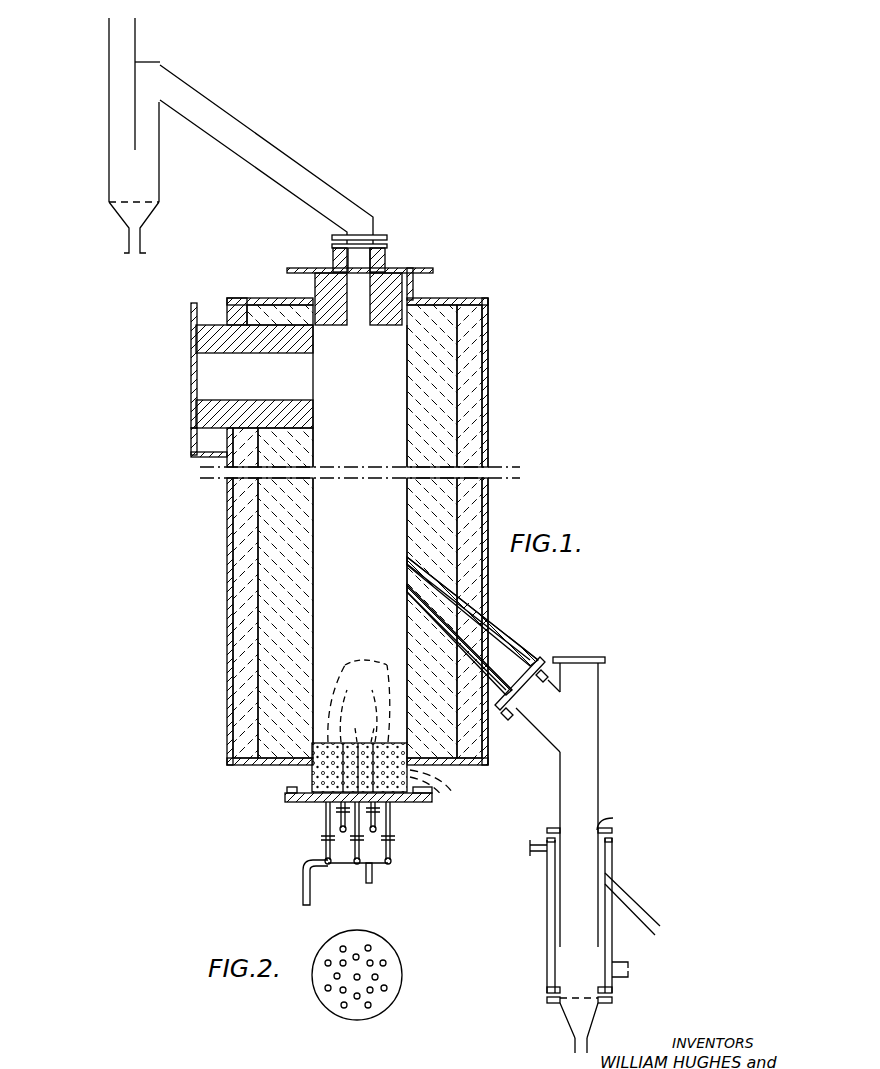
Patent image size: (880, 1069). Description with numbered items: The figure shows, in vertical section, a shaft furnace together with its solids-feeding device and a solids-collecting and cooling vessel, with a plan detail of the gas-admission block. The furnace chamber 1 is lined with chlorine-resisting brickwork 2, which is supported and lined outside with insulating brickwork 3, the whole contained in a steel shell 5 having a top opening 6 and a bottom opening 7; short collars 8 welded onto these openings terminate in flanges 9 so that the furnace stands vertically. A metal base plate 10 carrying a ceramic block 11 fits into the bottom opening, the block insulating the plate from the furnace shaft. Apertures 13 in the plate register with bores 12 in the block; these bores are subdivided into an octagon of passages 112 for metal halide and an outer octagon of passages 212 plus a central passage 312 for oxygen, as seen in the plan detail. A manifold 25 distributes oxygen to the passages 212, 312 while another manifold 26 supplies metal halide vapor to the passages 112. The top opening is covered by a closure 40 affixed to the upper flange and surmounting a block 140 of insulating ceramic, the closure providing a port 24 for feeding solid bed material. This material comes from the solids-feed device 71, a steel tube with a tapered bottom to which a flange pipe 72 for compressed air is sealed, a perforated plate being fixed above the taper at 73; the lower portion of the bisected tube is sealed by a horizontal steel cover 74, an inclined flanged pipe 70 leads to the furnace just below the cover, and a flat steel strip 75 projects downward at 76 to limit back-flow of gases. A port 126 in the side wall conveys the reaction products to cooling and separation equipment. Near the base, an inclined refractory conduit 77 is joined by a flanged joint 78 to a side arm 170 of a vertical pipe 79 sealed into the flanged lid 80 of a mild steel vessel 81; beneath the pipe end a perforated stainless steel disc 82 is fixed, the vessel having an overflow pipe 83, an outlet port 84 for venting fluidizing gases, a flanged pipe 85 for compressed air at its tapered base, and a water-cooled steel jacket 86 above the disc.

In FIG. 1, the furnace chamber 1 is at (490, 378).
In FIG. 1, the chlorine-resisting brickwork 2 is at (447, 505).
In FIG. 1, the insulating brickwork 3 is at (478, 572).
In FIG. 1, the steel shell 5 is at (488, 425).
In FIG. 1, the top opening 6 is at (380, 333).
In FIG. 1, the bottom opening 7 is at (318, 713).
In FIG. 1, the short collars 8 is at (402, 285).
In FIG. 1, the flanges 9 is at (413, 272).
In FIG. 1, the metal base plate 10 is at (413, 802).
In FIG. 1, the ceramic block 11 is at (310, 771).
In FIG. 2, the ceramic block 11 is at (325, 1000).
In FIG. 1, the bores 12 is at (444, 789).
In FIG. 1, the apertures 13 is at (381, 803).
In FIG. 1, the port 24 is at (362, 258).
In FIG. 1, the oxygen manifold 25 is at (343, 864).
In FIG. 1, the metal halide manifold 26 is at (370, 876).
In FIG. 1, the closure 40 is at (433, 271).
In FIG. 1, the inclined flanged pipe 70 is at (192, 102).
In FIG. 1, the solids-feed device 71 is at (109, 88).
In FIG. 1, the flange pipe 72 is at (140, 240).
In FIG. 1, the taper 73 is at (150, 204).
In FIG. 1, the horizontal steel cover 74 is at (158, 60).
In FIG. 1, the flat steel strip 75 is at (135, 40).
In FIG. 1, the downward projection 76 is at (140, 145).
In FIG. 1, the conduit 77 is at (478, 641).
In FIG. 1, the flanged joint 78 is at (543, 662).
In FIG. 1, the vertical pipe 79 is at (598, 735).
In FIG. 1, the flanged lid 80 is at (612, 831).
In FIG. 1, the mild steel vessel 81 is at (612, 824).
In FIG. 1, the stainless steel disc 82 is at (570, 1000).
In FIG. 1, the overflow pipe 83 is at (632, 907).
In FIG. 1, the outlet port 84 is at (606, 820).
In FIG. 1, the flanged pipe 85 is at (573, 1050).
In FIG. 1, the steel jacket 86 is at (547, 920).
In FIG. 1, the metal halide passages 112 is at (362, 713).
In FIG. 2, the metal halide passages 112 is at (360, 997).
In FIG. 1, the side port 126 is at (205, 375).
In FIG. 1, the insulating ceramic block 140 is at (320, 290).
In FIG. 1, the side arm 170 is at (537, 722).
In FIG. 1, the outer oxygen passages 212 is at (366, 665).
In FIG. 2, the outer oxygen passages 212 is at (371, 947).
In FIG. 1, the central oxygen passage 312 is at (359, 727).
In FIG. 2, the central oxygen passage 312 is at (360, 978).